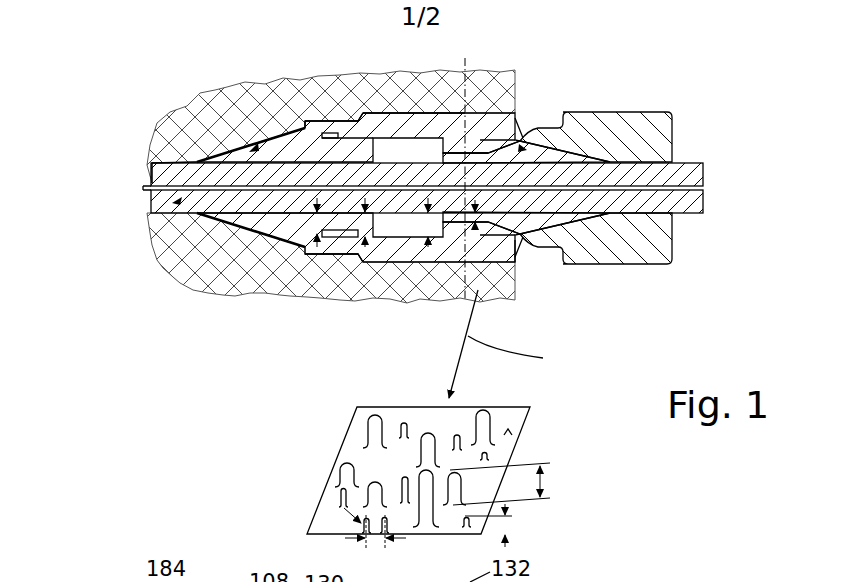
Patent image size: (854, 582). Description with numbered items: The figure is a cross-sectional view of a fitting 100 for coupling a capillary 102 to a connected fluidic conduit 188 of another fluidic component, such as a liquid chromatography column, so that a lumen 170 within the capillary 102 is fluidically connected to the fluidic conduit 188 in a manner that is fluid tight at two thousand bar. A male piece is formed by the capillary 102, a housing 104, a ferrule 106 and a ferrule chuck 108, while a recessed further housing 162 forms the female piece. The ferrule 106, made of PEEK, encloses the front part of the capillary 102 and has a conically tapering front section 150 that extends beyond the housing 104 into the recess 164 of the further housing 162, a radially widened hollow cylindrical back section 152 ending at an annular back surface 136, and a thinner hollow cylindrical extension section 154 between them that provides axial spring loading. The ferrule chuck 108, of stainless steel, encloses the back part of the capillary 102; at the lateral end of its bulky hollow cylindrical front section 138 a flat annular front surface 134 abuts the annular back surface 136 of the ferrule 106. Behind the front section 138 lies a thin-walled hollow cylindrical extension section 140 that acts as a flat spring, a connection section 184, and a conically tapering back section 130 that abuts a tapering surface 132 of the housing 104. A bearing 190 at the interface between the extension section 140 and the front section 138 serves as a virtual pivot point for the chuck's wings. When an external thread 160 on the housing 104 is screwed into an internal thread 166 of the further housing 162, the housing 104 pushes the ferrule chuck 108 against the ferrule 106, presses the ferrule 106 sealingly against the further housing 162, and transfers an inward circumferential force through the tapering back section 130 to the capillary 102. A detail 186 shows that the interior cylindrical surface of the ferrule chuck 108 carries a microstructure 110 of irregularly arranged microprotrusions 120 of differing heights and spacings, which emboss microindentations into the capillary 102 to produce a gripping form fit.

The fitting 100 is at (432, 204).
The capillary 102 is at (152, 198).
The housing 104 is at (368, 258).
The ferrule 106 is at (232, 158).
The ferrule chuck 108 is at (540, 135).
The microstructure 110 is at (400, 455).
The microprotrusions 120 is at (403, 427).
The tapering back section 130 is at (528, 150).
The tapering surface 132 is at (587, 155).
The annular front surface 134 is at (335, 130).
The annular back surface 136 is at (330, 118).
The hollow cylindrical front section 138 is at (371, 118).
The hollow cylindrical extension section 140 is at (478, 157).
The tapering front section 150 is at (197, 160).
The hollow cylindrical back section 152 is at (333, 122).
The hollow cylindrical extension section 154 is at (297, 115).
The external thread 160 is at (437, 262).
The further housing 162 is at (212, 258).
The recess 164 is at (320, 263).
The internal thread 166 is at (492, 282).
The lumen 170 is at (668, 187).
The connection section 184 is at (532, 128).
The detail 186 is at (482, 308).
The fluidic conduit 188 is at (146, 186).
The bearing 190 is at (405, 118).